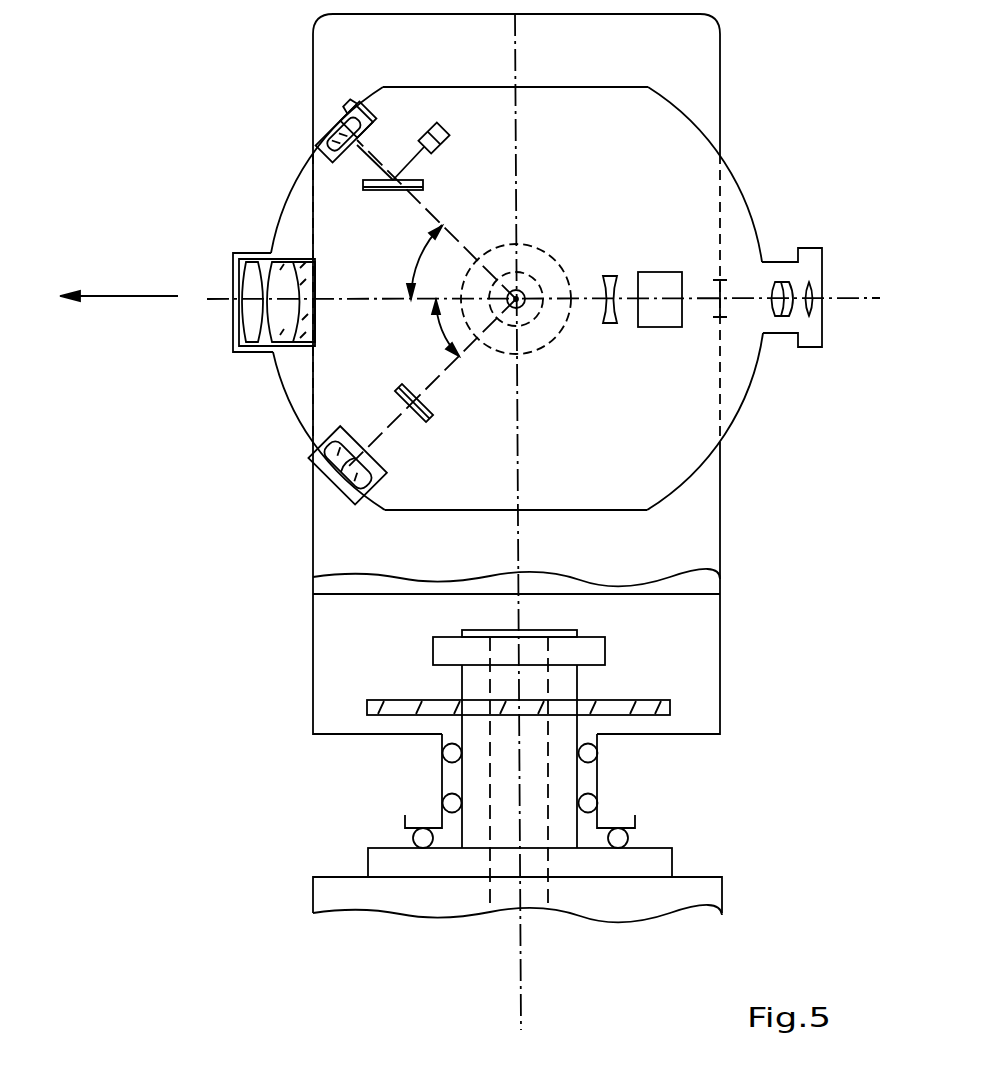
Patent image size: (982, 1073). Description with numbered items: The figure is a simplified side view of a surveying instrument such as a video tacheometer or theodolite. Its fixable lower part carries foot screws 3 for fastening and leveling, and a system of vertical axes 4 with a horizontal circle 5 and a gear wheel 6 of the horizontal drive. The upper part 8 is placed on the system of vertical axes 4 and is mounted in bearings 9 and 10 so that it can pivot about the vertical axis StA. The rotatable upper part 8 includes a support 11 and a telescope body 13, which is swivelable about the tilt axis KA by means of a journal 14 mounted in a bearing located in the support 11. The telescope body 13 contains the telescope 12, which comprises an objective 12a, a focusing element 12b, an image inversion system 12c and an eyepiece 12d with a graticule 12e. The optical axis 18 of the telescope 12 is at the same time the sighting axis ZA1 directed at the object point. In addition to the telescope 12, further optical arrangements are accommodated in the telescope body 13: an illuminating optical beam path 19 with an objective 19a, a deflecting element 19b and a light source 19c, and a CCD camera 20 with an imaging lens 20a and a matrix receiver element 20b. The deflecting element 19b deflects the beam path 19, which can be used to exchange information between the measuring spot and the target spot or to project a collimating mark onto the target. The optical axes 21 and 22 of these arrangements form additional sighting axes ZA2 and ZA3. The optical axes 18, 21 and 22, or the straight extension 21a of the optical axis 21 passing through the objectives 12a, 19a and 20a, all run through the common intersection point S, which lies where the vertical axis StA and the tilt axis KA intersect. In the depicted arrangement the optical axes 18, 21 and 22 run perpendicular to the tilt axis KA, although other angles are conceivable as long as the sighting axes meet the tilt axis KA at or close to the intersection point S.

The foot screws 3 is at (715, 897).
The system of vertical axes 4 is at (568, 777).
The horizontal circle 5 is at (667, 707).
The gear wheel 6 is at (597, 648).
The upper part 8 is at (720, 610).
The bearing 9 is at (445, 755).
The bearing 10 is at (420, 835).
The support 11 is at (705, 78).
The telescope 12 is at (233, 253).
The objective 12a is at (272, 365).
The focusing element 12b is at (616, 275).
The image inversion system 12c is at (667, 323).
The eyepiece 12d is at (787, 262).
The graticule 12e is at (720, 307).
The telescope body 13 is at (697, 477).
The journal 14 is at (548, 258).
The optical axis 18 is at (858, 298).
The illuminating optical beam path 19 is at (320, 141).
The objective 19a is at (372, 100).
The deflecting element 19b is at (373, 190).
The light source 19c is at (450, 128).
The CCD camera 20 is at (315, 467).
The imaging lens 20a is at (380, 483).
The matrix receiver element 20b is at (425, 420).
The optical axis 21 is at (373, 160).
The straight extension of optical axis 21a is at (420, 204).
The optical axis 22 is at (325, 488).
The tilt axis KA is at (522, 306).
The vertical axis StA is at (521, 978).
The common intersection point S is at (606, 380).
The sighting axis ZA1 is at (141, 303).
The sighting axis ZA2 is at (327, 117).
The sighting axis ZA3 is at (327, 488).